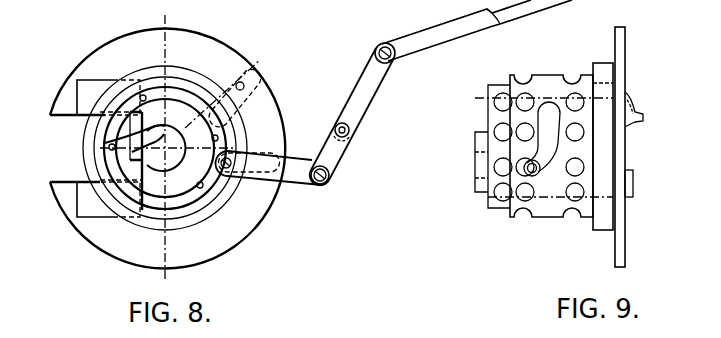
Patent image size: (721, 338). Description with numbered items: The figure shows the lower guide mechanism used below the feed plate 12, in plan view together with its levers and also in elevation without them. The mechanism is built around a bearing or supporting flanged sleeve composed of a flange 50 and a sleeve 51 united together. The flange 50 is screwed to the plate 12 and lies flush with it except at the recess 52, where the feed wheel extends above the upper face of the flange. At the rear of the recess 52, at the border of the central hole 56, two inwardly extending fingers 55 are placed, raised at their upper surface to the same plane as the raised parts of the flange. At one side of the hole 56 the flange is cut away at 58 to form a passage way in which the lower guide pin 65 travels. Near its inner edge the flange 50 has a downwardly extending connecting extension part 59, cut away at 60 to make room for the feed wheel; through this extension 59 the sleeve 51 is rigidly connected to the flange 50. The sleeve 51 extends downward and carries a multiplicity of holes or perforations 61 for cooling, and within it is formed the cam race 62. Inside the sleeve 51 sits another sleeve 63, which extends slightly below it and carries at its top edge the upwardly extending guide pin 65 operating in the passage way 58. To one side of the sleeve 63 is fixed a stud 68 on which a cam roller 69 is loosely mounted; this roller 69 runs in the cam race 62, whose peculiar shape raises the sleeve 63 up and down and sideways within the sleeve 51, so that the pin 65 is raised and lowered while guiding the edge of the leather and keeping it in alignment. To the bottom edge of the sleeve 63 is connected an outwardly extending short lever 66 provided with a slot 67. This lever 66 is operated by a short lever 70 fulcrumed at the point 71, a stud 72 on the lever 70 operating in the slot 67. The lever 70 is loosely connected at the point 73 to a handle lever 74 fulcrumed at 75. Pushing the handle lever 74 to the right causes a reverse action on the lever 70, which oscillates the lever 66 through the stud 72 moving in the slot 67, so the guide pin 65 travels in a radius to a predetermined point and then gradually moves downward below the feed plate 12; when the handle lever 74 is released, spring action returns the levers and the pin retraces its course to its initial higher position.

In FIG. 8, the feed plate 12 is at (180, 146).
In FIG. 8, the flange 50 is at (242, 238).
In FIG. 9, the flange 50 is at (620, 243).
In FIG. 8, the sleeve 51 is at (183, 208).
In FIG. 9, the sleeve 51 is at (552, 217).
In FIG. 8, the recess 52 is at (92, 170).
In FIG. 8, the inwardly extending fingers 55 is at (110, 103).
In FIG. 8, the central hole 56 is at (177, 137).
In FIG. 8, the passage way 58 is at (105, 143).
In FIG. 9, the connecting extension part 59 is at (603, 70).
In FIG. 9, the cut-away 60 is at (597, 85).
In FIG. 9, the holes or perforations 61 is at (575, 167).
In FIG. 9, the cam race 62 is at (548, 118).
In FIG. 8, the sleeve 63 is at (200, 190).
In FIG. 9, the guide pin 65 is at (640, 118).
In FIG. 8, the lever 66 is at (278, 145).
In FIG. 9, the lever 66 is at (477, 140).
In FIG. 8, the slot 67 is at (228, 85).
In FIG. 9, the stud 68 is at (524, 172).
In FIG. 9, the cam roller 69 is at (524, 168).
In FIG. 8, the short lever 70 is at (336, 157).
In FIG. 8, the fulcrum point 71 is at (326, 183).
In FIG. 8, the stud 72 is at (238, 188).
In FIG. 8, the connection point 73 is at (349, 129).
In FIG. 8, the handle lever 74 is at (425, 36).
In FIG. 8, the fulcrum 75 is at (378, 45).